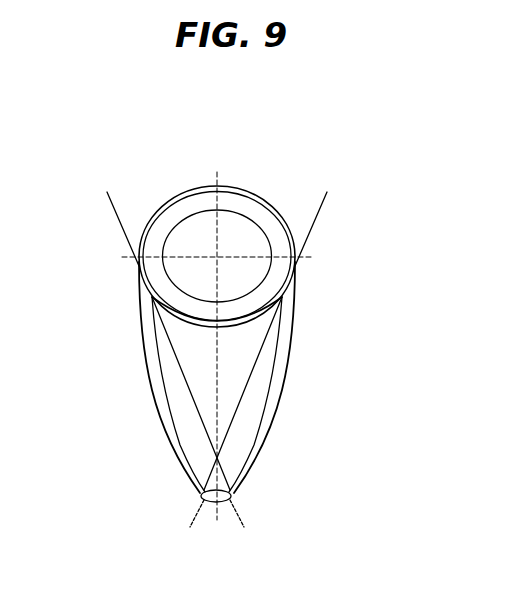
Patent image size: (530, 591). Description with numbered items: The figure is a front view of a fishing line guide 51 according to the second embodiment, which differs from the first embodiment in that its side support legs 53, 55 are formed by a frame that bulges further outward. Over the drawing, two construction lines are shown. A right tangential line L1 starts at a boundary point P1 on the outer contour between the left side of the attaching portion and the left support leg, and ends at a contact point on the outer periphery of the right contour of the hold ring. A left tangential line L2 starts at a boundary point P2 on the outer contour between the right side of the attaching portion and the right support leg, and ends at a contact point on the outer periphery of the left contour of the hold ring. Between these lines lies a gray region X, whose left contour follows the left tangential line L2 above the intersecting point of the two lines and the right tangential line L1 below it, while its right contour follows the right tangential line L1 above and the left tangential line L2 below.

The fishing line guide 51 is at (275, 191).
The side support leg 53 is at (153, 393).
The side support leg 55 is at (273, 418).
The gray region X is at (238, 366).
The right tangential line L1 is at (340, 234).
The left tangential line L2 is at (99, 231).
The boundary point P1 is at (168, 524).
The boundary point P2 is at (298, 527).